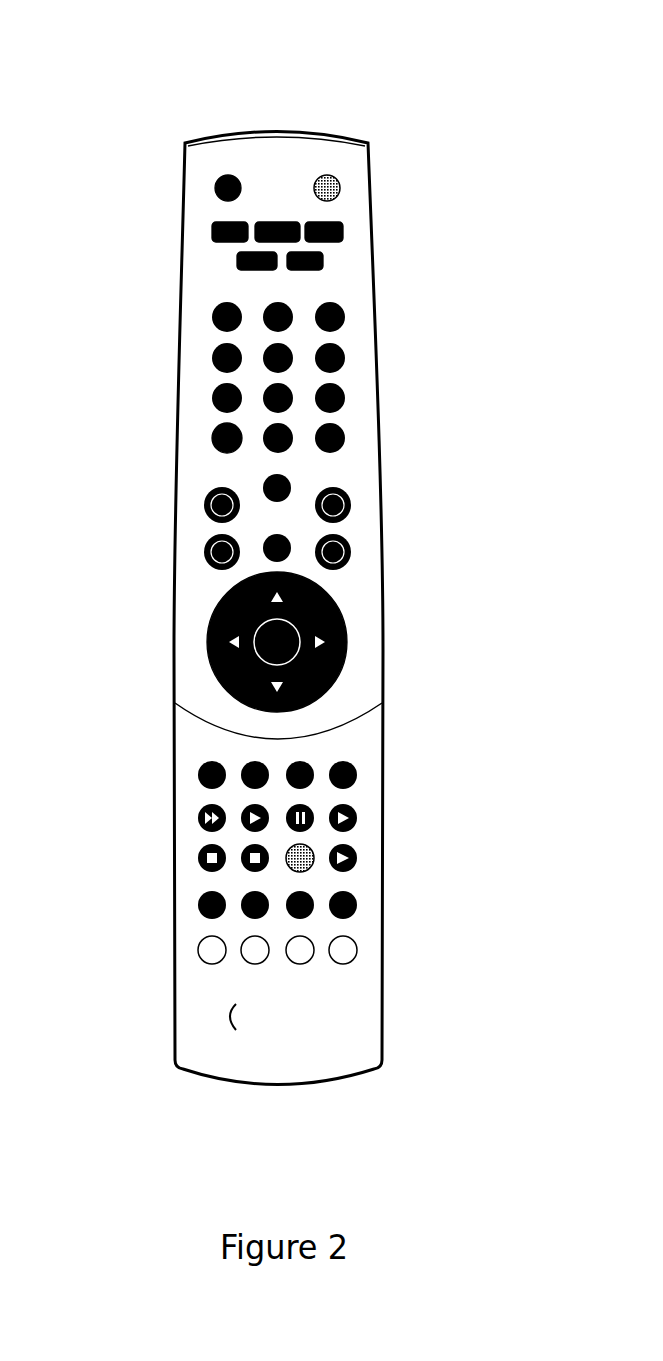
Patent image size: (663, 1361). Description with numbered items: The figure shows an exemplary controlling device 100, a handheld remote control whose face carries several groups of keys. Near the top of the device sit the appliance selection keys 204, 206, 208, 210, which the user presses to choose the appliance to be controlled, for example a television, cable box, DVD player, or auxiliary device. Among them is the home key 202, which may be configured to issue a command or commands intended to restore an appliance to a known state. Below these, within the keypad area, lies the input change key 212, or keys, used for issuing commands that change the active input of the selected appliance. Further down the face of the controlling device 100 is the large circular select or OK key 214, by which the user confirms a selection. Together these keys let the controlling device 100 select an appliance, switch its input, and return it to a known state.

The controlling device 100 is at (263, 1139).
The home key 202 is at (278, 218).
The appliance selection key 204 is at (337, 218).
The appliance selection key 206 is at (321, 267).
The appliance selection key 208 is at (213, 221).
The appliance selection key 210 is at (240, 268).
The input change key 212 is at (215, 450).
The select or OK key 214 is at (313, 703).